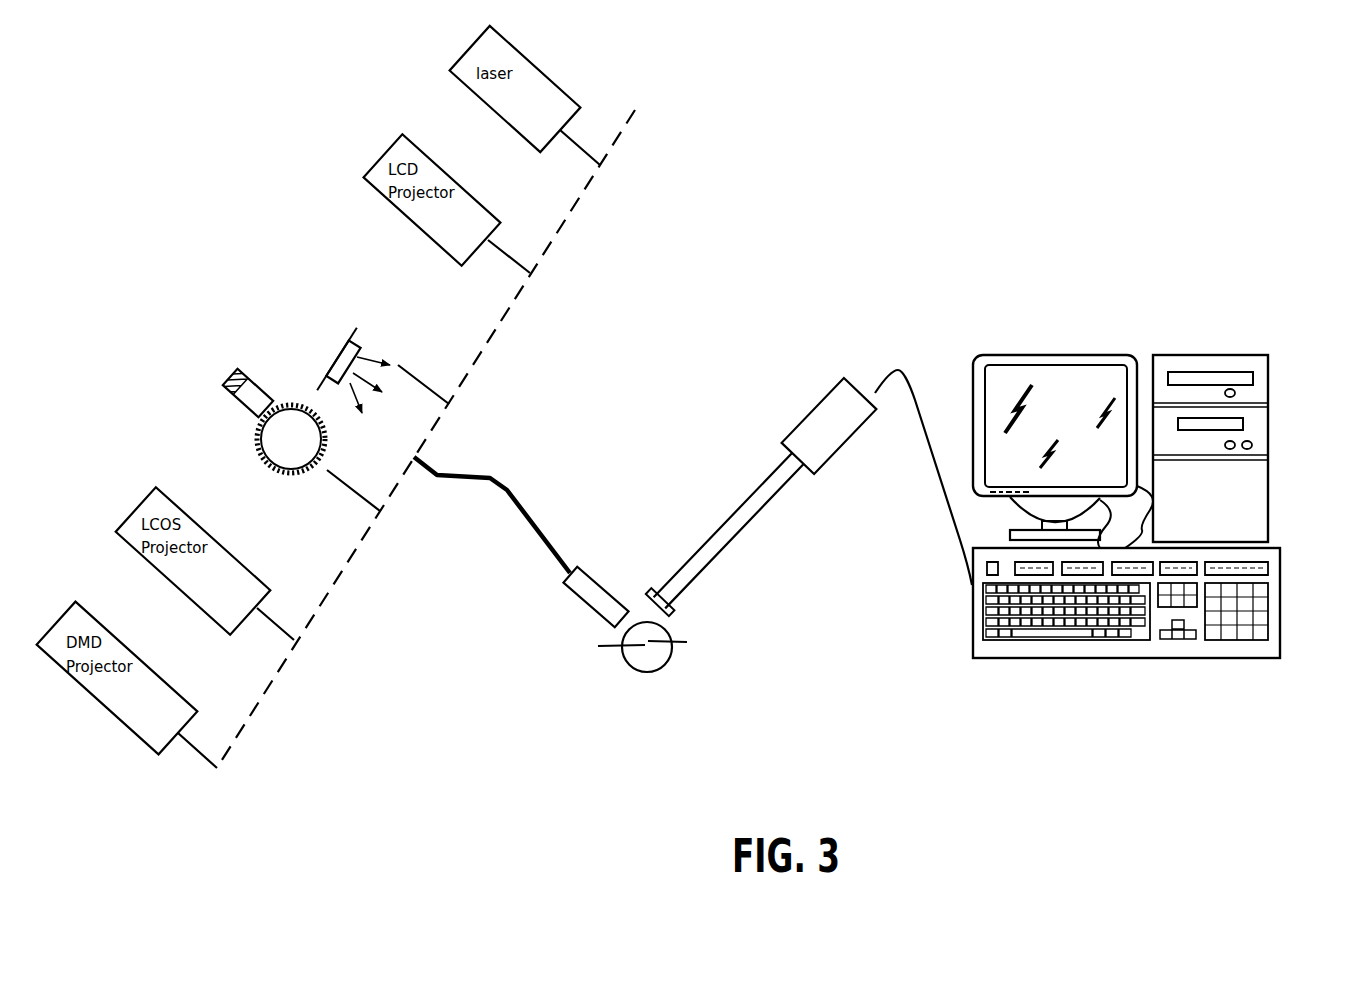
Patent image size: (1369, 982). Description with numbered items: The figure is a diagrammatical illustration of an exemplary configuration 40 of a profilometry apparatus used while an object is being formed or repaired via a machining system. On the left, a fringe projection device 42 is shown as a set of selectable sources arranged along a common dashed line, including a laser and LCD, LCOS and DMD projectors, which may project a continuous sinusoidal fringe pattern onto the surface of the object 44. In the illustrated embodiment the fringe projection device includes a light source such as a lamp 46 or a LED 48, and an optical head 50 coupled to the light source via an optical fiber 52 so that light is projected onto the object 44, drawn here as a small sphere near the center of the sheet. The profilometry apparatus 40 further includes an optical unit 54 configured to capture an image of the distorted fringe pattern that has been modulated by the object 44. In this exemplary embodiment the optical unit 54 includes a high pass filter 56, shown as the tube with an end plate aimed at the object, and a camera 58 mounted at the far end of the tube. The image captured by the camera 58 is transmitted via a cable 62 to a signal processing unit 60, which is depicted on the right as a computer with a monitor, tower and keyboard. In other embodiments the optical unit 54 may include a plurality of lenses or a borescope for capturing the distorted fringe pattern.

The exemplary configuration of the profilometry apparatus 40 is at (1262, 153).
The fringe projection device 42 is at (277, 325).
The object 44 is at (650, 662).
The lamp 46 is at (252, 420).
The LED 48 is at (347, 352).
The optical head 50 is at (597, 587).
The optical fiber 52 is at (532, 518).
The optical unit 54 is at (761, 480).
The high pass filter 56 is at (738, 513).
The camera 58 is at (807, 413).
The signal processing unit 60 is at (1268, 485).
The cable 62 is at (900, 363).